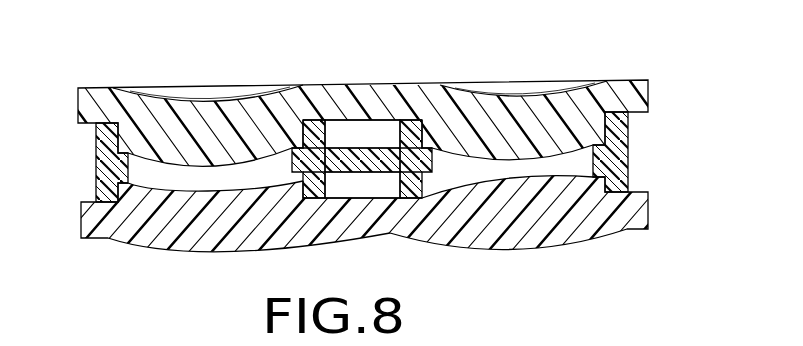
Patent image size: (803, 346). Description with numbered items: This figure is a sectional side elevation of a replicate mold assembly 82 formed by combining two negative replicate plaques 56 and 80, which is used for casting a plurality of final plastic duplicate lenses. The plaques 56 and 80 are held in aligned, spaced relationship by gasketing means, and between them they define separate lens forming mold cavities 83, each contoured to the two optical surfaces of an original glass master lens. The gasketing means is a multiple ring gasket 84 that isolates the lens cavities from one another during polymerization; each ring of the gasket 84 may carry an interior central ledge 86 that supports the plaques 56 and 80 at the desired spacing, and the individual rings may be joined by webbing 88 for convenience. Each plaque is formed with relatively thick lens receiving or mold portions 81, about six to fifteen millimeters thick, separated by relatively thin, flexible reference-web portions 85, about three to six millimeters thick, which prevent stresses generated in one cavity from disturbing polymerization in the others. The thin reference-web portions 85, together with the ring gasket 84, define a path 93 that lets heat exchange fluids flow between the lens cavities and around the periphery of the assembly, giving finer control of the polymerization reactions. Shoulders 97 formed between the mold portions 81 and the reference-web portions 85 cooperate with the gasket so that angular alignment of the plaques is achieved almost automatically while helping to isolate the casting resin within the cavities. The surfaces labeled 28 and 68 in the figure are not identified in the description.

The sealing surface of upper ring 28 is at (175, 162).
The negative replicate plaque 56 is at (370, 117).
The sealing surface of lower ring 68 is at (209, 197).
The negative replicate plaque 80 is at (361, 218).
The lens receiving or mold portions 81 is at (370, 160).
The replicate mold assembly 82 is at (370, 160).
The lens forming mold cavities 83 is at (107, 163).
The multiple ring gasket 84 is at (326, 181).
The reference-web portions 85 is at (370, 160).
The interior central ledge 86 is at (293, 162).
The webbing 88 is at (348, 145).
The path 93 is at (339, 121).
The shoulders 97 is at (429, 117).